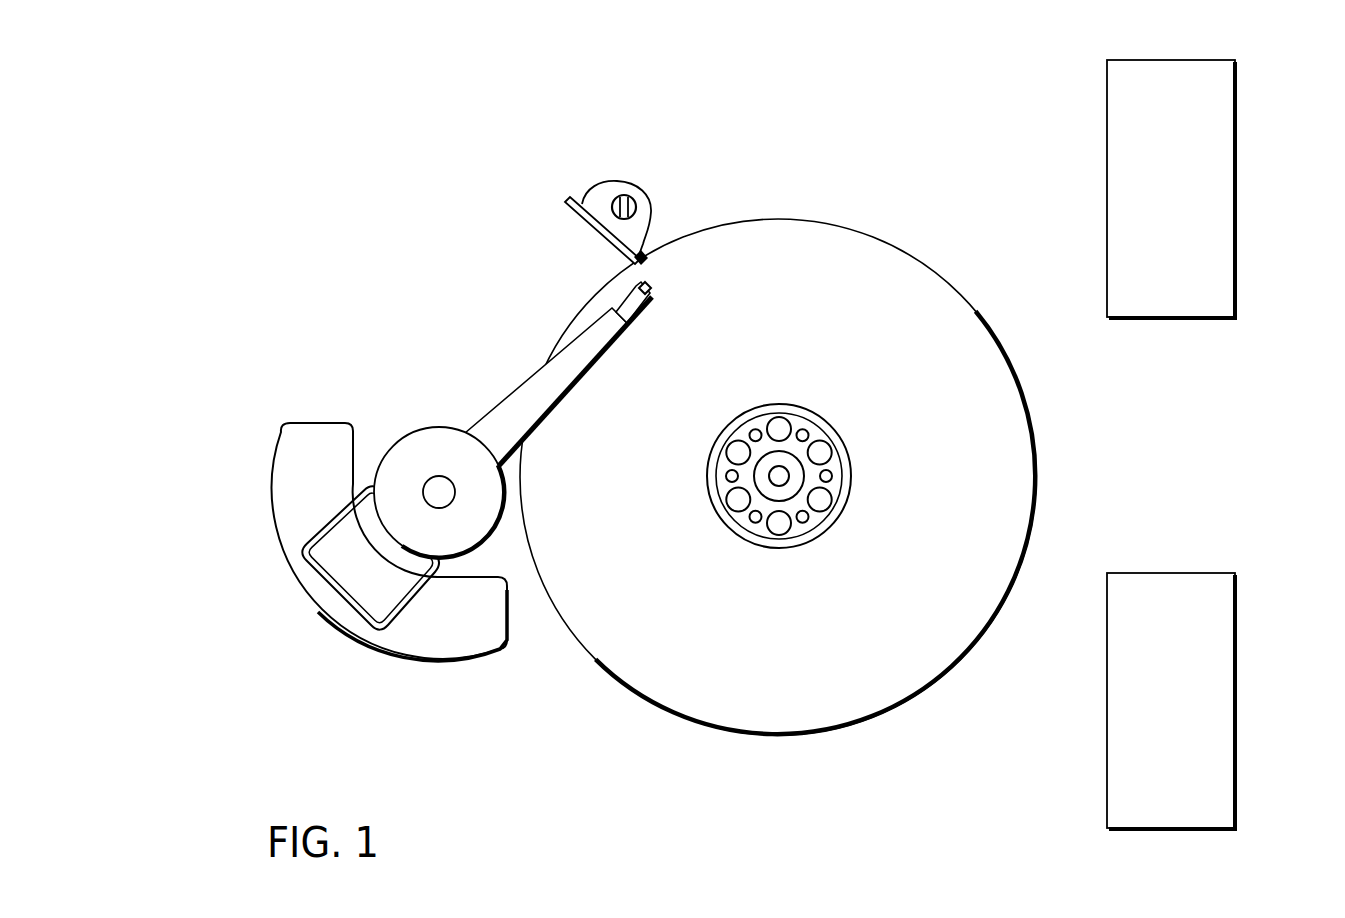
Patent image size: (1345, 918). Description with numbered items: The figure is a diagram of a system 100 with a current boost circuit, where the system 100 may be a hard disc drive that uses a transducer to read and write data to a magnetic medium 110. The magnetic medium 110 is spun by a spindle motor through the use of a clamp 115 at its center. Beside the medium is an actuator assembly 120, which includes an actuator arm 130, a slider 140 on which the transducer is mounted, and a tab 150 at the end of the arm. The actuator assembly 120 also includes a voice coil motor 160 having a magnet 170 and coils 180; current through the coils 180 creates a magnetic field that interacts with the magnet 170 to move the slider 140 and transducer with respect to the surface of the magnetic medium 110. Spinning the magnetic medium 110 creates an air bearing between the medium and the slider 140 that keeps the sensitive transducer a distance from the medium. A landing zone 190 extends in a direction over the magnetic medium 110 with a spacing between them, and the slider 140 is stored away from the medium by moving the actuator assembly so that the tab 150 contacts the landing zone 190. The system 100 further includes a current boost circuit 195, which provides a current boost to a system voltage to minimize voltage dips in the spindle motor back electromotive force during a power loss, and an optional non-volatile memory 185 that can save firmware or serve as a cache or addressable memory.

The system 100 is at (350, 76).
The magnetic medium 110 is at (1037, 515).
The clamp 115 is at (851, 448).
The actuator assembly 120 is at (536, 420).
The actuator arm 130 is at (528, 370).
The slider 140 is at (633, 318).
The tab 150 is at (653, 291).
The voice coil motor 160 is at (240, 525).
The magnet 170 is at (312, 422).
The coils 180 is at (400, 622).
The non-volatile memory 185 is at (1107, 130).
The landing zone 190 is at (590, 194).
The current boost circuit 195 is at (1235, 603).